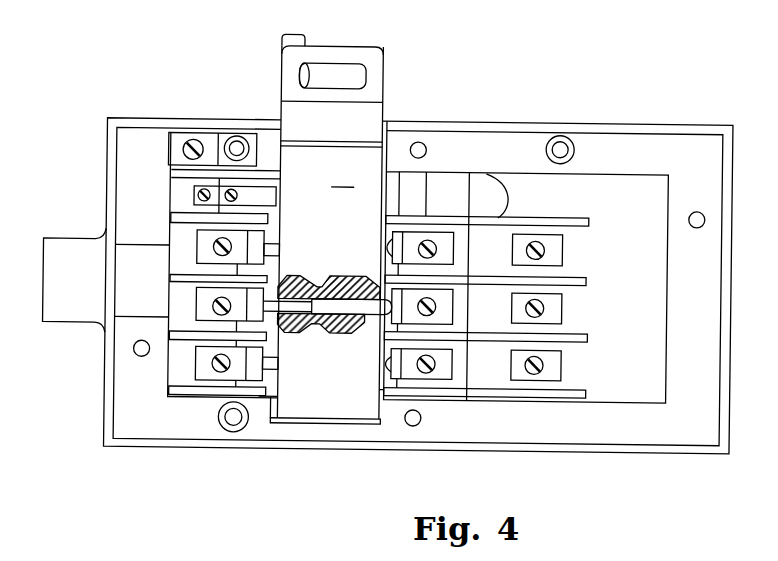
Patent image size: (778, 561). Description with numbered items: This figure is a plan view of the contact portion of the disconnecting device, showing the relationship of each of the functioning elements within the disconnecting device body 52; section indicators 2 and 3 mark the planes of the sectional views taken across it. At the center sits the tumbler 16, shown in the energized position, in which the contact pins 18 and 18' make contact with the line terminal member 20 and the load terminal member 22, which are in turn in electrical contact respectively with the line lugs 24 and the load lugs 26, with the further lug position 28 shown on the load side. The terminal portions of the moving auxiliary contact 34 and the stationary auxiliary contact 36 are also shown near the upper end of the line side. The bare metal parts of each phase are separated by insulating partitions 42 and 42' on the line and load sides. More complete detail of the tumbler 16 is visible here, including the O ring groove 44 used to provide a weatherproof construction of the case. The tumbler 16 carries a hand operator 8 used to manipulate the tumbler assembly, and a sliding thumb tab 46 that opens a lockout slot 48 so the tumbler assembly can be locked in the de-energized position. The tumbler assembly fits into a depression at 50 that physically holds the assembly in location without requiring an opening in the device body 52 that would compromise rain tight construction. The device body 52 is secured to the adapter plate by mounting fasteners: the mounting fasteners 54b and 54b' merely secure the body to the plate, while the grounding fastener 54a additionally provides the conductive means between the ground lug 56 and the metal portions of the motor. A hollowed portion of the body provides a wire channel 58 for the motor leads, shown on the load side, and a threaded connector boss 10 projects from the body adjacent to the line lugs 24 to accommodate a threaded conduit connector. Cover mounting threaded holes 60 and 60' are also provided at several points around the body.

The section line 2- 2 is at (156, 486).
The section line 3- 3 is at (158, 73).
The hand operator 8 is at (382, 88).
The threaded connector boss 10 is at (81, 242).
The tumbler 16 is at (323, 232).
The contact pins 18 is at (327, 282).
The lower contact blade 18' is at (334, 356).
The line terminal member 20 is at (265, 246).
The load terminal member 22 is at (389, 358).
The line lugs 24 is at (196, 299).
The load lugs 26 is at (453, 239).
The right second terminal 28 is at (562, 297).
The moving auxiliary contact 34 is at (270, 194).
The stationary auxiliary contact 36 is at (197, 193).
The insulating partition 42 is at (197, 301).
The right bus bar 42' is at (510, 307).
The O ring groove 44 is at (321, 141).
The thumb tab 46 is at (292, 36).
The lockout slot 48 is at (300, 70).
The depression 50 is at (346, 426).
The disconnecting device body 52 is at (493, 451).
The grounding fastener 54a is at (230, 136).
The mounting fasteners 54b is at (547, 131).
The mounting hole 54b' is at (223, 437).
The ground lug 56 is at (213, 133).
The wire channel 58 is at (462, 186).
The cover mounting threaded holes 60 is at (426, 263).
The hole 60' is at (414, 286).